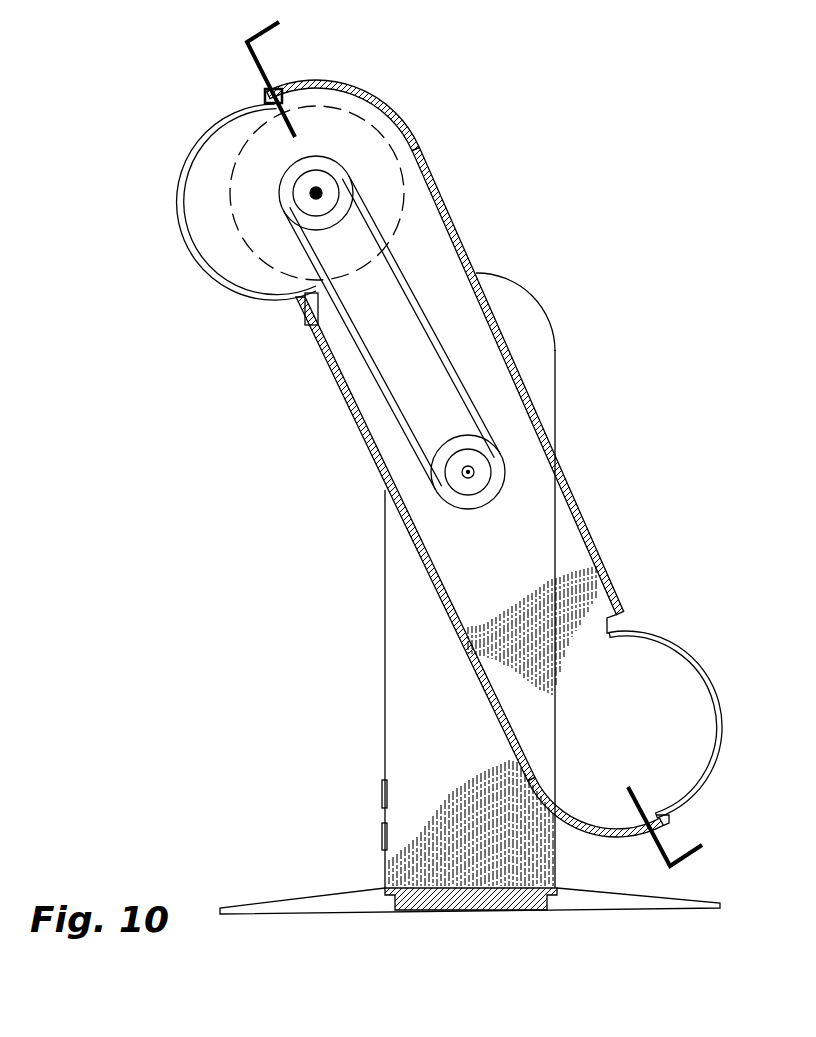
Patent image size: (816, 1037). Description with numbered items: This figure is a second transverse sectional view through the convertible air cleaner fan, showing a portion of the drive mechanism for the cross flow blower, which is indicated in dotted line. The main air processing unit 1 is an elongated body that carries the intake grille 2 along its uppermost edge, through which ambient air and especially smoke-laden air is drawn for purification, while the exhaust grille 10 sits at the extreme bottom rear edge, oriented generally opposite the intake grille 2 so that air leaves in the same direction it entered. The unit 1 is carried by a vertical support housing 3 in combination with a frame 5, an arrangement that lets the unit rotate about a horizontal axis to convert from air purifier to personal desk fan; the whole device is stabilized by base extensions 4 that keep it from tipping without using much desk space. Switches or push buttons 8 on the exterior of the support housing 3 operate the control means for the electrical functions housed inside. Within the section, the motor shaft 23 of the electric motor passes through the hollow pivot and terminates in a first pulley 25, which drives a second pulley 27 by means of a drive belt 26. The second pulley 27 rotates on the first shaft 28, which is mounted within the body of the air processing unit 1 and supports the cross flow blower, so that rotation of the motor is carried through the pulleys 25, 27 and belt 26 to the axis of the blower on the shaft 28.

The main air processing unit 1 is at (463, 238).
The intake grille 2 is at (278, 288).
The vertical support housing 3 is at (542, 366).
The base extensions 4 is at (290, 900).
The frame 5 is at (538, 888).
The switches or push buttons 8 is at (382, 790).
The exhaust grille 10 is at (678, 650).
The motor shaft 23 is at (480, 473).
The first pulley 25 is at (484, 497).
The drive belt 26 is at (427, 330).
The second pulley 27 is at (343, 185).
The first shaft 28 is at (318, 190).